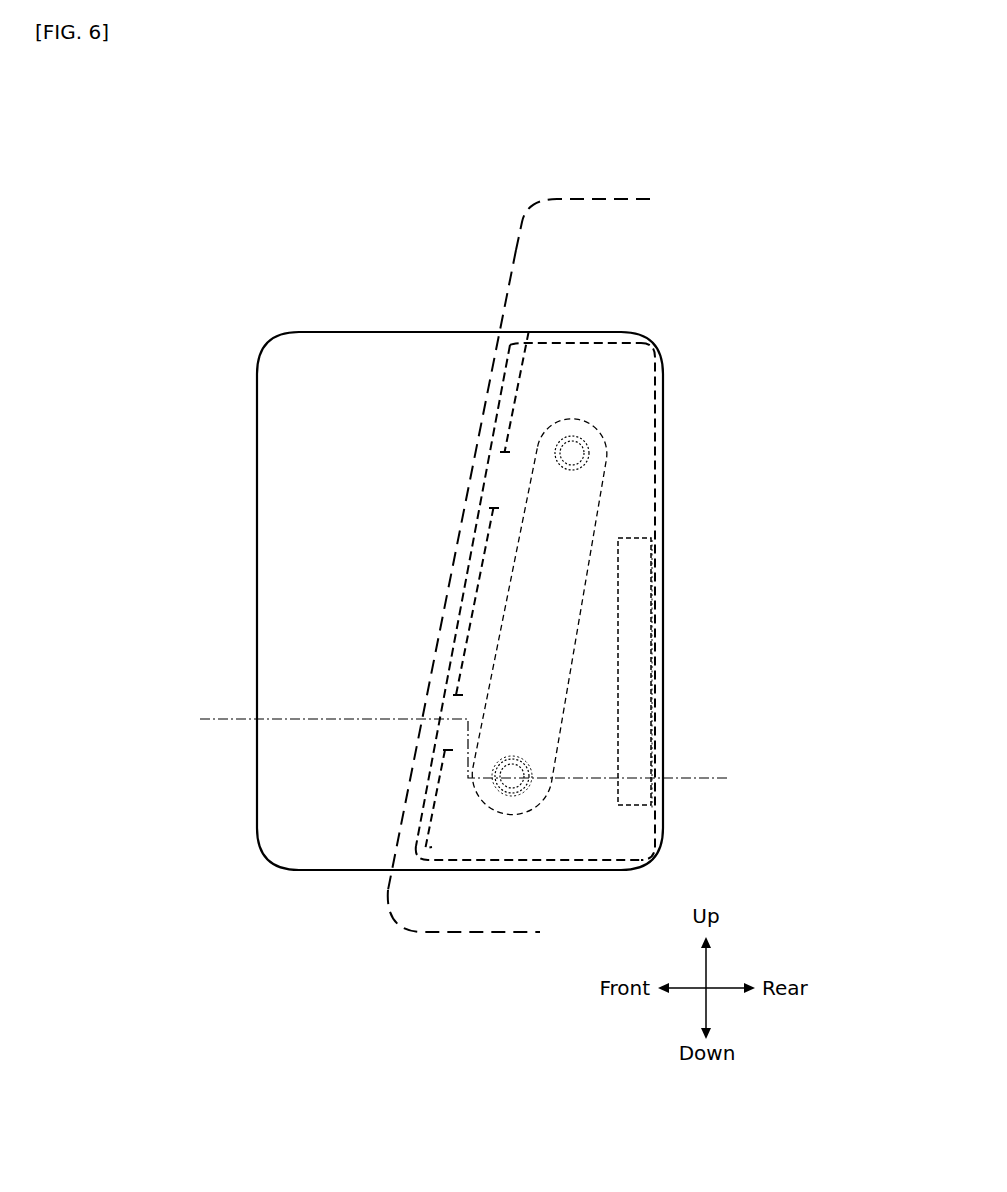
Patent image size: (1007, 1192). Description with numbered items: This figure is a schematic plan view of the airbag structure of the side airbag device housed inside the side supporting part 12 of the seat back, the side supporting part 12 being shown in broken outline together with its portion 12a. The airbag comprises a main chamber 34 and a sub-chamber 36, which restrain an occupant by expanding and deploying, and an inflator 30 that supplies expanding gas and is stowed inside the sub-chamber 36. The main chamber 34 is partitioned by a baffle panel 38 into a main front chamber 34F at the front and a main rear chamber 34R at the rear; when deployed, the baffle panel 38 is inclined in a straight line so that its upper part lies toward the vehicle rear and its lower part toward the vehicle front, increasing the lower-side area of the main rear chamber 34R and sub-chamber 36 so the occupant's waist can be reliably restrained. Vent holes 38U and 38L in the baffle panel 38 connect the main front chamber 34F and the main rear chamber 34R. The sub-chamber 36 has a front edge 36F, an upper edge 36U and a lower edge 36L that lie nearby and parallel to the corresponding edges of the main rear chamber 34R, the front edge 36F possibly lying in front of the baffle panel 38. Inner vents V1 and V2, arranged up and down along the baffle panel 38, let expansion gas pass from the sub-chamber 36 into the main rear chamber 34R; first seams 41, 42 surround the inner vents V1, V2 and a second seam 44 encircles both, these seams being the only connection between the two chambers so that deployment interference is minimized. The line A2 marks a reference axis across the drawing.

The side supporting part 12 is at (506, 601).
The inclined body portion 12a is at (438, 610).
The inflator 30 is at (664, 633).
The main chamber 34 is at (456, 570).
The main front chamber 34F is at (275, 468).
The main rear chamber 34R is at (663, 352).
The sub-chamber 36 is at (551, 616).
The upper edge of the sub-chamber 36U is at (550, 343).
The front edge of the sub-chamber 36F is at (468, 550).
The lower edge of the sub-chamber 36L is at (572, 865).
The baffle panel 38 is at (362, 566).
The vent hole 38U is at (492, 465).
The vent hole 38L is at (442, 708).
The first seam 41 is at (604, 460).
The first seam 42 is at (530, 795).
The second seam 44 is at (585, 576).
The inner vent V1 is at (572, 442).
The inner vent V2 is at (522, 767).
The axis line A2 is at (207, 695).